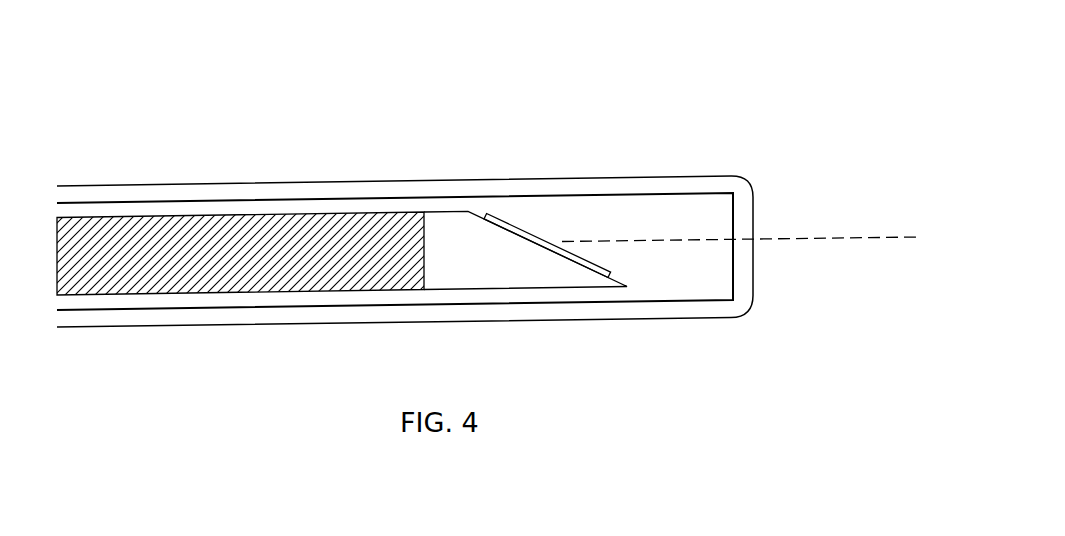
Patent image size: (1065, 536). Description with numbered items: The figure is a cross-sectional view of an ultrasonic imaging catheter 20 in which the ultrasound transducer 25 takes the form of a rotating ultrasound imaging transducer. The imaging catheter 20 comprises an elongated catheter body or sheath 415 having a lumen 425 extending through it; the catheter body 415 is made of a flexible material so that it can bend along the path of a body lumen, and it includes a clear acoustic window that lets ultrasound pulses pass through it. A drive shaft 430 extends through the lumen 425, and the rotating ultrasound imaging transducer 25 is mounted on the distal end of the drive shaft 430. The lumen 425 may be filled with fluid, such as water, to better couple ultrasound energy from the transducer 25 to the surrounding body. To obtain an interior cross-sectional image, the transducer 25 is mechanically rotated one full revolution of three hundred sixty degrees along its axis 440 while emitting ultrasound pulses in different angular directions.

The ultrasonic imaging catheter 20 is at (310, 34).
The rotating ultrasound imaging transducer 25 is at (528, 230).
The catheter body 415 is at (735, 178).
The lumen 425 is at (668, 277).
The drive shaft 430 is at (262, 285).
The axis 440 is at (820, 234).